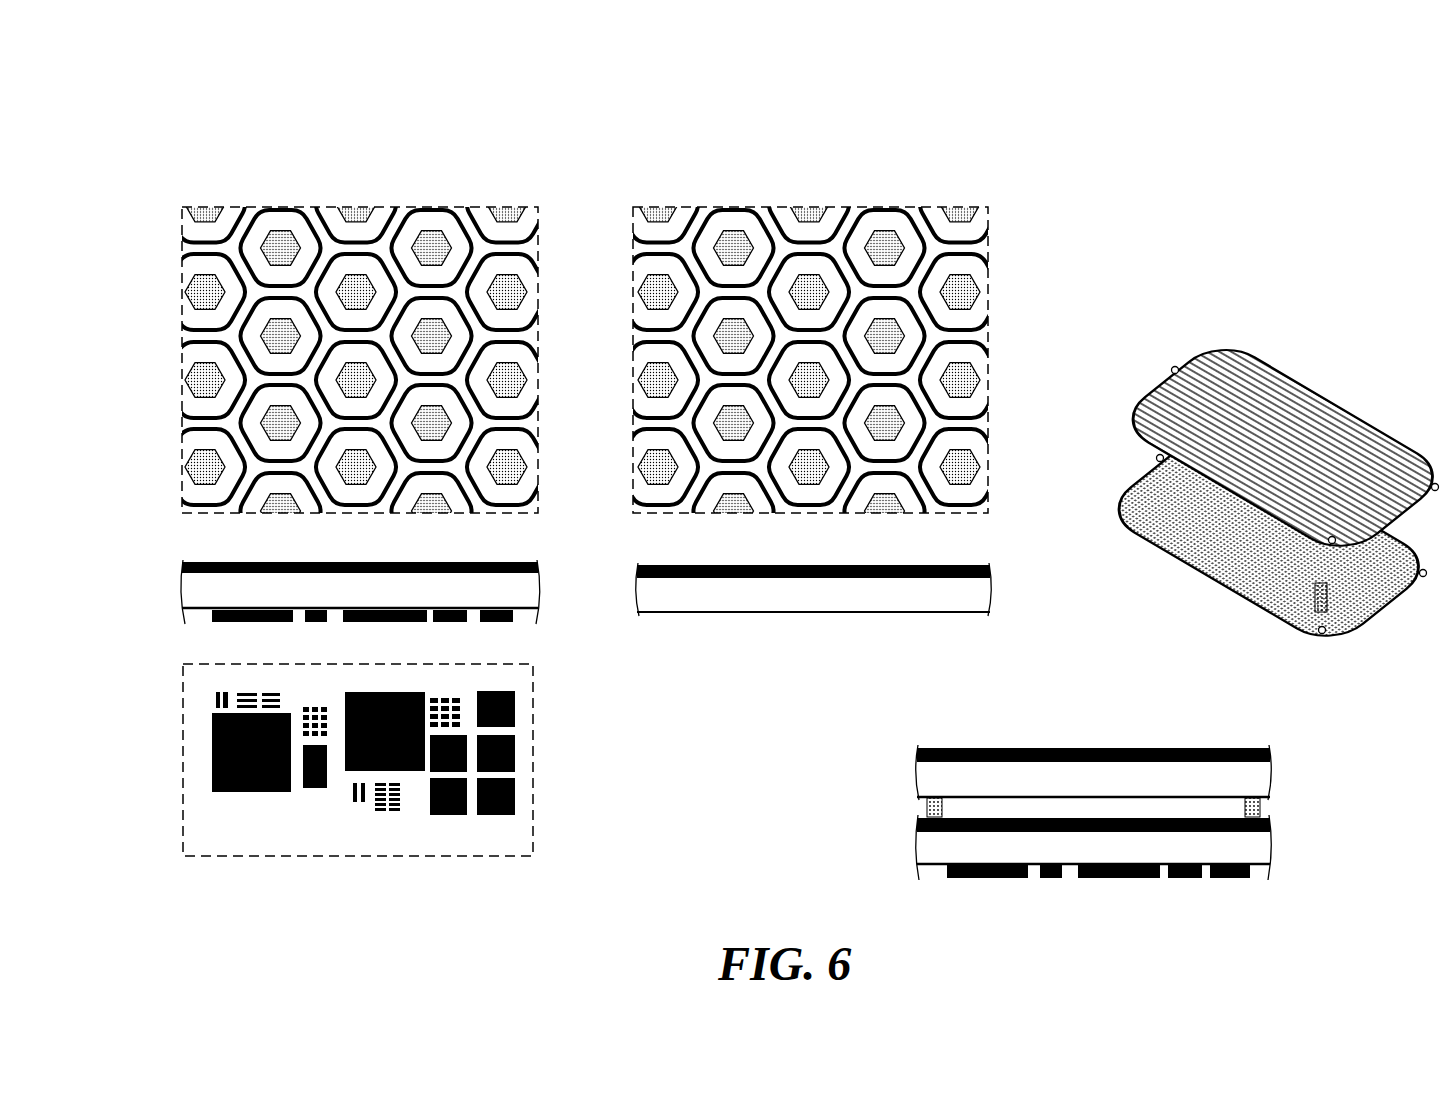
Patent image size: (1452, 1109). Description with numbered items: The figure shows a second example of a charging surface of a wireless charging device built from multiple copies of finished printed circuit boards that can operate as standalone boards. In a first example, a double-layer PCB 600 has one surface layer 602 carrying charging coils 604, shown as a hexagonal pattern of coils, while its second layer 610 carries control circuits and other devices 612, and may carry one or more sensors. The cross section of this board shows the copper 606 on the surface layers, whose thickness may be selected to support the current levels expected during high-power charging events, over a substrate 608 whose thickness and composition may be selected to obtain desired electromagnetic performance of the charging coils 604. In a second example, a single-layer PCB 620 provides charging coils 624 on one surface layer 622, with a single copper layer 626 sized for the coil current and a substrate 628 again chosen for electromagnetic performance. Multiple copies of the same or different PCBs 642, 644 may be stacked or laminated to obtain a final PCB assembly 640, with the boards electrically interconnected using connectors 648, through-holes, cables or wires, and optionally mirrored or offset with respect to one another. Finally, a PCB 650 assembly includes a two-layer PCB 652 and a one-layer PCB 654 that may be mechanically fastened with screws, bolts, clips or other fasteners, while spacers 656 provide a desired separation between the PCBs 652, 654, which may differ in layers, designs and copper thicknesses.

The double-layer PCB 600 is at (146, 106).
The surface layer 602 is at (185, 207).
The charging coil 604 is at (198, 295).
The copper 606 is at (190, 562).
The substrate 608 is at (205, 590).
The second layer 610 is at (183, 680).
The control circuits and other devices 612 is at (212, 772).
The single-layer PCB 620 is at (620, 107).
The surface layer 622 is at (690, 207).
The charging coil 624 is at (887, 243).
The copper layer 626 is at (672, 562).
The substrate 628 is at (672, 589).
The PCB assembly 640 is at (1123, 301).
The PCB 642 is at (1145, 378).
The PCB 644 is at (1153, 548).
The connector 648 is at (1327, 605).
The PCB assembly 650 is at (945, 727).
The 2-layer PCB 652 is at (1094, 772).
The 1-layer PCB 654 is at (1094, 847).
The spacer 656 is at (927, 803).